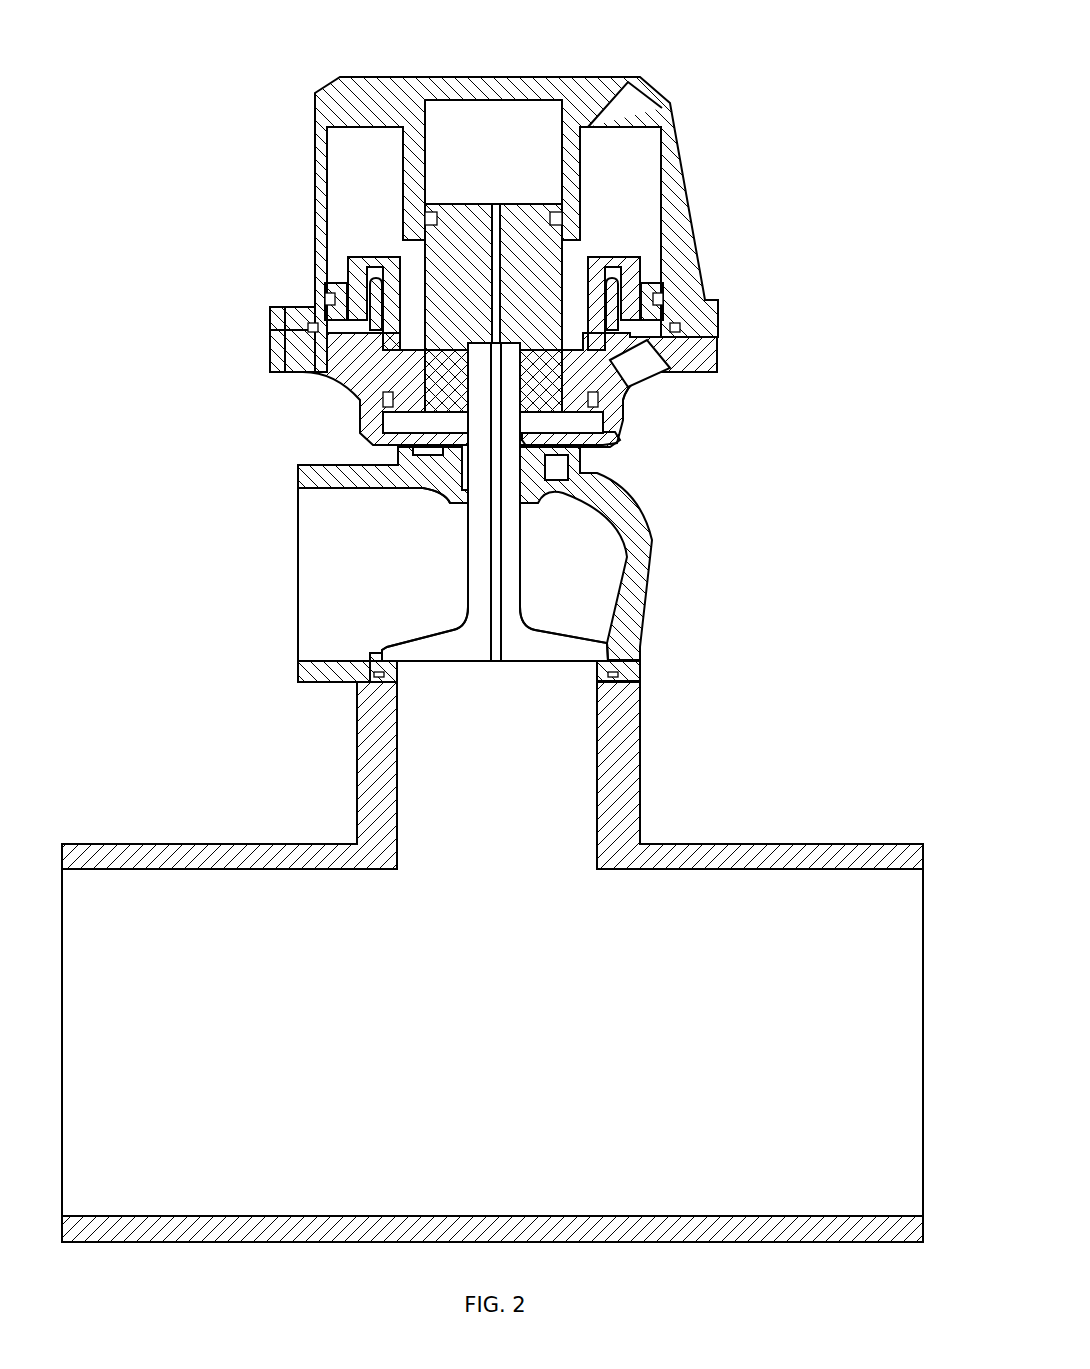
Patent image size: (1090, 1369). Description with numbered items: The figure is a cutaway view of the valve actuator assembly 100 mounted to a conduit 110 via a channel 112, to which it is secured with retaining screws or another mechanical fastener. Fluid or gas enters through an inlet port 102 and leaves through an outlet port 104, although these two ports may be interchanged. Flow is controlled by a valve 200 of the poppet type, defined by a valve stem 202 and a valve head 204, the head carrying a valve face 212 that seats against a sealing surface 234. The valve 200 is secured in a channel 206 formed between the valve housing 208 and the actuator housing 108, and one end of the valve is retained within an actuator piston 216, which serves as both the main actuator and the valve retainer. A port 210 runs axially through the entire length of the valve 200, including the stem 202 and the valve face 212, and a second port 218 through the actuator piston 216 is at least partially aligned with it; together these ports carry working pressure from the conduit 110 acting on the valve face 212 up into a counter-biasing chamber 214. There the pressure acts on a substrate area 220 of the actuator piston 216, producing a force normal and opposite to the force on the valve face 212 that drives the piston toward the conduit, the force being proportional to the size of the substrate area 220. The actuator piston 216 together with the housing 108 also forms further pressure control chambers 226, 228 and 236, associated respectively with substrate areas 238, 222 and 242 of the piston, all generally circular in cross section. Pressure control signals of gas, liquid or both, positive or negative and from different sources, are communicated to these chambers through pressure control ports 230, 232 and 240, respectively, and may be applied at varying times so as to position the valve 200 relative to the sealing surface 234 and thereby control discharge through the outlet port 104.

The valve actuator assembly 100 is at (832, 94).
The inlet port 102 is at (427, 682).
The outlet port 104 is at (489, 564).
The actuator housing 108 is at (315, 117).
The conduit 110 is at (857, 843).
The channel 112 is at (357, 808).
The valve 200 is at (445, 602).
The valve stem 202 is at (468, 522).
The valve head 204 is at (560, 632).
The channel 206 is at (583, 473).
The valve housing 208 is at (652, 517).
The port 210 is at (497, 672).
The valve face 212 is at (540, 662).
The counter-biasing chamber 214 is at (455, 135).
The actuator piston 216 is at (440, 380).
The second port 218 is at (502, 228).
The substrate area 220 is at (525, 203).
The substrate area 222 is at (348, 321).
The pressure control chamber 226 is at (352, 140).
The pressure control chamber 228 is at (653, 327).
The pressure control port 230 is at (645, 100).
The pressure control port 232 is at (660, 366).
The sealing surface 234 is at (640, 660).
The pressure control chamber 236 is at (588, 423).
The substrate area 238 is at (415, 350).
The pressure control port 240 is at (627, 413).
The substrate area 242 is at (413, 413).